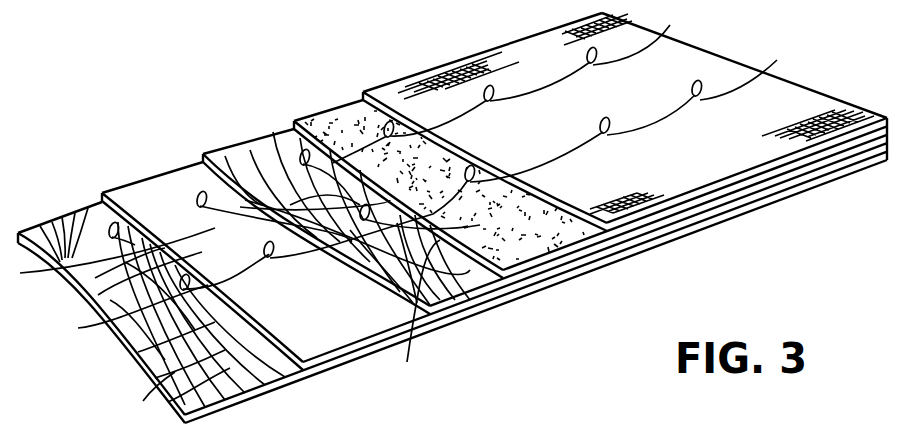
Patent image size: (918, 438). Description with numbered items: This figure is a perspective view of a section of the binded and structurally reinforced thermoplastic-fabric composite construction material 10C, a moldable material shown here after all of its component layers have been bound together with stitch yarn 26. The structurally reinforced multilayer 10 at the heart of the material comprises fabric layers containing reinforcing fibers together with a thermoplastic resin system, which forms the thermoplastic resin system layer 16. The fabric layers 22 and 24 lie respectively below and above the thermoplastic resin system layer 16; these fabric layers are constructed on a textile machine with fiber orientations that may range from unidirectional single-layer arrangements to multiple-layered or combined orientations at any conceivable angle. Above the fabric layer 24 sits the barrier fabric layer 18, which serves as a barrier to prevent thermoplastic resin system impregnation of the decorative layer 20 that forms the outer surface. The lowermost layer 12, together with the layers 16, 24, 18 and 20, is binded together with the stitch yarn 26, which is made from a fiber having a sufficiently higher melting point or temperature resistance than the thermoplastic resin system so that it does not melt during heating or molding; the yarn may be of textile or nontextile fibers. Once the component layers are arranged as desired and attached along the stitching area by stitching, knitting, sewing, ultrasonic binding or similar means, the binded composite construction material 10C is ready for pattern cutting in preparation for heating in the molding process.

The structurally reinforced multilayer 10 is at (447, 263).
The binded and structurally reinforced thermoplastic-fabric composite construction m 10C is at (725, 256).
The layer 12 is at (282, 336).
The thermoplastic resin system layer 16 is at (150, 178).
The barrier fabric layer 18 is at (327, 107).
The decorative layer 20 is at (515, 57).
The fabric layer 22 is at (53, 222).
The fabric layer 24 is at (247, 140).
The stitch yarn 26 is at (723, 96).